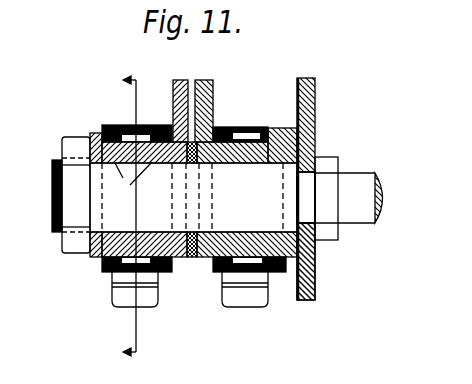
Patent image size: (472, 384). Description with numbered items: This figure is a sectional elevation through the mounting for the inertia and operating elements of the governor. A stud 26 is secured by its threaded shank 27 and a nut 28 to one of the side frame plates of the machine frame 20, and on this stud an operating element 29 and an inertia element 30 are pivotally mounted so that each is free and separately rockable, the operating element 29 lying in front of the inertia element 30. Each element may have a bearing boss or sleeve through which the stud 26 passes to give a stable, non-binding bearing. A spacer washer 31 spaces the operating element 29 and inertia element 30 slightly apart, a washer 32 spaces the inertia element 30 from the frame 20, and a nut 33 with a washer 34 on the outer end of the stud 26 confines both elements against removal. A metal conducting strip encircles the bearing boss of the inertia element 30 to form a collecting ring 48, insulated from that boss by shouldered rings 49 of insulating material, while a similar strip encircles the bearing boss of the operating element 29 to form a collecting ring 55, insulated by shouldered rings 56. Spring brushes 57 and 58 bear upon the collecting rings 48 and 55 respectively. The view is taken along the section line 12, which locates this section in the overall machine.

The section line 12 is at (114, 222).
The machine frame 20 is at (316, 267).
The stud 26 is at (113, 209).
The threaded shank 27 is at (358, 184).
The nut 28 is at (330, 164).
The operating element 29 is at (175, 84).
The inertia element 30 is at (212, 86).
The spacer washer 31 is at (191, 258).
The washer 32 is at (289, 128).
The nut 33 is at (63, 145).
The washer 34 is at (96, 140).
The collecting ring 48 is at (242, 127).
The shouldered rings 49 is at (273, 138).
The collecting ring 55 is at (146, 116).
The shouldered rings 56 is at (138, 183).
The spring brush 57 is at (249, 299).
The spring brush 58 is at (143, 300).